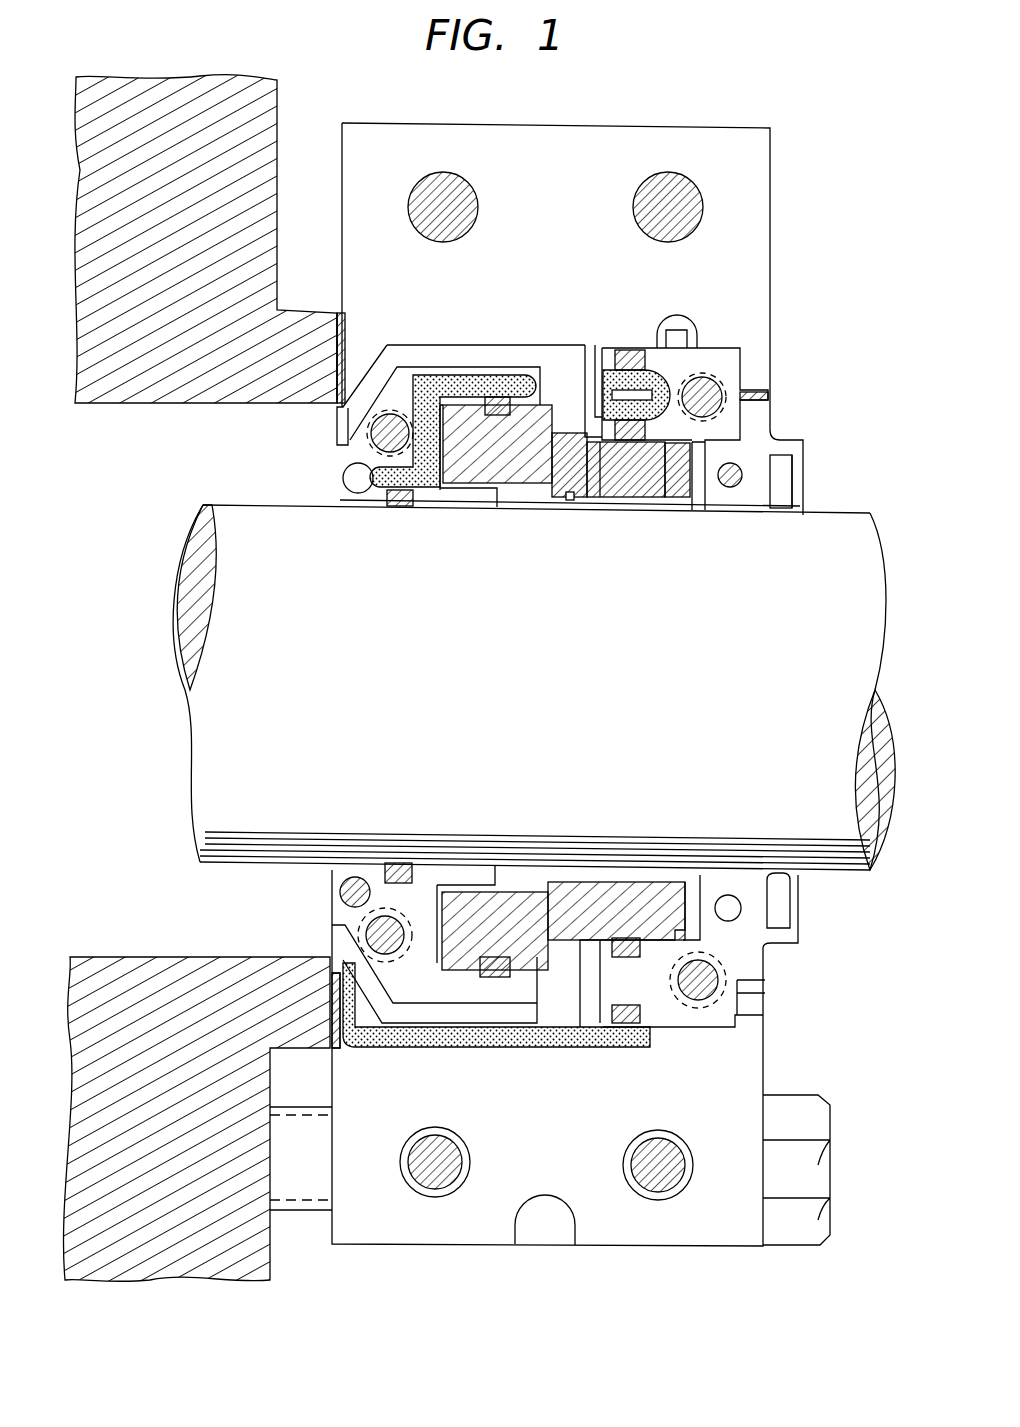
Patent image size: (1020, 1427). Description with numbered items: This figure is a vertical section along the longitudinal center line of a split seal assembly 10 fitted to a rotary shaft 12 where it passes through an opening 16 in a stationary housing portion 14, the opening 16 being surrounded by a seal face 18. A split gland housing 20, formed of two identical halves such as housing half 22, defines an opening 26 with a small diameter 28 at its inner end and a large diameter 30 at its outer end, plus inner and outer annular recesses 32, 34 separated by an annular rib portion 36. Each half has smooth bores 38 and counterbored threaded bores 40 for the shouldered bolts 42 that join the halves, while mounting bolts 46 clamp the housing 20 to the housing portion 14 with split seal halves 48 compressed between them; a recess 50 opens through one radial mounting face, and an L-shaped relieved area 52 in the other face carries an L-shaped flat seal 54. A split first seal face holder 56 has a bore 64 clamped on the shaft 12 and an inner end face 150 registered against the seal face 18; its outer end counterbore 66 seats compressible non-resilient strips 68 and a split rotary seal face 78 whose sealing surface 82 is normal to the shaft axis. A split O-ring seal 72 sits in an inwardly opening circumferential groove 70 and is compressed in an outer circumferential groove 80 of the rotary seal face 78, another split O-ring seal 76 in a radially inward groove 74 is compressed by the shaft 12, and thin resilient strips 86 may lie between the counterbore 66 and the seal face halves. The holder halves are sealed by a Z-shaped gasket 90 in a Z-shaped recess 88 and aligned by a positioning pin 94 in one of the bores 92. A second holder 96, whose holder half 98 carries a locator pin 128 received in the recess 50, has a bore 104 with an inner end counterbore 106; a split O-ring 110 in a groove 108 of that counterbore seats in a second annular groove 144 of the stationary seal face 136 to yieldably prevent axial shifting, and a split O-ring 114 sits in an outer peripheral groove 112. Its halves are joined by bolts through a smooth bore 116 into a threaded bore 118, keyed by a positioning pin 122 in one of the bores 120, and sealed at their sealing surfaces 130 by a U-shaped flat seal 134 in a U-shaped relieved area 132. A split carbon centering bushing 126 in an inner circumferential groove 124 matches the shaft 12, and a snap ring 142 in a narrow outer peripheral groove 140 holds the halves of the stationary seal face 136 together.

The split seal assembly 10 is at (640, 113).
The rotary shaft 12 is at (185, 705).
The stationary housing portion 14 is at (106, 405).
The opening 16 is at (190, 405).
The seal face 18 is at (346, 358).
The split gland housing 20 is at (520, 124).
The housing half 22 is at (762, 181).
The opening 26 is at (340, 456).
The first small diameter 28 is at (336, 428).
The second large diameter 30 is at (770, 403).
The inner end annular recess 32 is at (468, 345).
The outer end annular recess 34 is at (732, 350).
The annular rib portion 36 is at (591, 345).
The smooth bores 38 is at (633, 207).
The threaded bores 40 is at (692, 1168).
The shouldered bolts 42 is at (642, 1174).
The mounting bolts 46 is at (790, 1102).
The split seal halves 48 is at (336, 990).
The recess 50 is at (645, 347).
The L-shaped relieved area 52 is at (433, 1050).
The L-shaped flat seal 54 is at (616, 1035).
The first seal face holder 56 is at (345, 510).
The bore 64 is at (358, 507).
The outer end counterbore 66 is at (430, 375).
The compressible non-resilient strips 68 is at (448, 890).
The inwardly opening circumferential groove 70 is at (478, 1046).
The split O-ring seal 72 is at (492, 1040).
The radially inwardly opening circumferential groove 74 is at (425, 863).
The split O-ring seal 76 is at (397, 863).
The rotary seal face 78 is at (483, 892).
The outer circumferential groove 80 is at (540, 885).
The sealing surface 82 is at (552, 882).
The thin resilient strips 86 is at (500, 980).
The Z-shaped recess 88 is at (425, 507).
The Z-shaped compressible gasket 90 is at (377, 507).
The bore 92 is at (338, 885).
The positioning pin 94 is at (378, 918).
The holder 96 is at (790, 441).
The holder half 98 is at (771, 419).
The bore 104 is at (775, 870).
The inner end counterbore 106 is at (655, 880).
The circumferential inwardly opening groove 108 is at (595, 1005).
The split O-ring 110 is at (612, 885).
The outer peripheral groove 112 is at (615, 1000).
The split O-ring 114 is at (640, 1025).
The smooth bore 116 is at (718, 982).
The threaded bore 118 is at (722, 392).
The bore 120 is at (725, 894).
The positioning pin 122 is at (735, 463).
The inner circumferential groove 124 is at (794, 482).
The carbon centering bushing 126 is at (778, 508).
The locator pin 128 is at (677, 333).
The sealing surfaces 130 is at (700, 362).
The o-ring 132 is at (612, 372).
The U-shaped flat seal 134 is at (575, 345).
The stationary seal face 136 is at (572, 503).
The narrow outer peripheral groove 140 is at (600, 500).
The snap ring 142 is at (545, 345).
The second annular groove 144 is at (668, 500).
The inner end face 150 is at (340, 485).